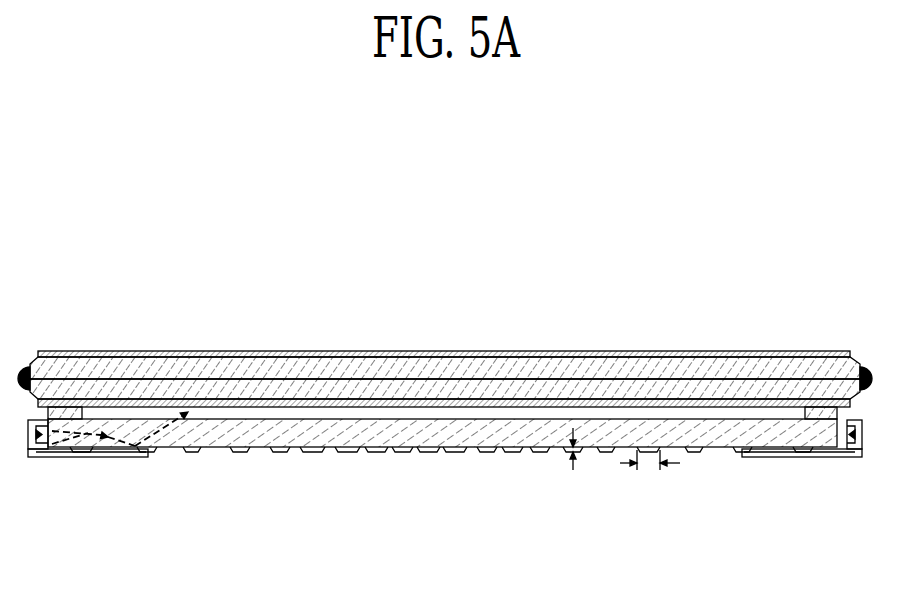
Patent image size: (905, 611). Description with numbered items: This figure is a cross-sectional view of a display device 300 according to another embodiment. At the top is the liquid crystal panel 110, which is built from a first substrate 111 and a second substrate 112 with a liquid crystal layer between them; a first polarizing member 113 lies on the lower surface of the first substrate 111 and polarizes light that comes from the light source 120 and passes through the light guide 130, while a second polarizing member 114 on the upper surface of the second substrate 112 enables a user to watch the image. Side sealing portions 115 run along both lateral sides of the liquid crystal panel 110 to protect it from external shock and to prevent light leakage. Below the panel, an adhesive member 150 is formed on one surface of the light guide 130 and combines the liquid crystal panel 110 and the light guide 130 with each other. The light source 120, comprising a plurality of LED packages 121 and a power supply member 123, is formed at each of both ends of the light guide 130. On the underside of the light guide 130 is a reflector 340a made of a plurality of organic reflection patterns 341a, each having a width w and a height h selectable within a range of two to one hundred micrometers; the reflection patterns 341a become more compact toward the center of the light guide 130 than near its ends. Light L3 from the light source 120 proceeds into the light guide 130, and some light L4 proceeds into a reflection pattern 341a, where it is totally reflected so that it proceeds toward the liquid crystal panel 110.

The display device 300 is at (93, 218).
The liquid crystal panel 110 is at (588, 275).
The first substrate 111 is at (402, 388).
The second substrate 112 is at (465, 370).
The first polarizing member 113 is at (519, 401).
The second polarizing member 114 is at (580, 351).
The side sealing portion 115 is at (868, 369).
The adhesive member 150 is at (810, 412).
The light guide 130 is at (325, 433).
The reflector 340a is at (478, 520).
The reflection pattern 341a is at (488, 451).
The height of reflection pattern h is at (583, 456).
The width of reflection pattern w is at (650, 472).
The light L3 is at (88, 436).
The light L4 is at (163, 433).
The light source 120 is at (783, 538).
The LED package 121 is at (852, 458).
The power supply member 123 is at (792, 458).